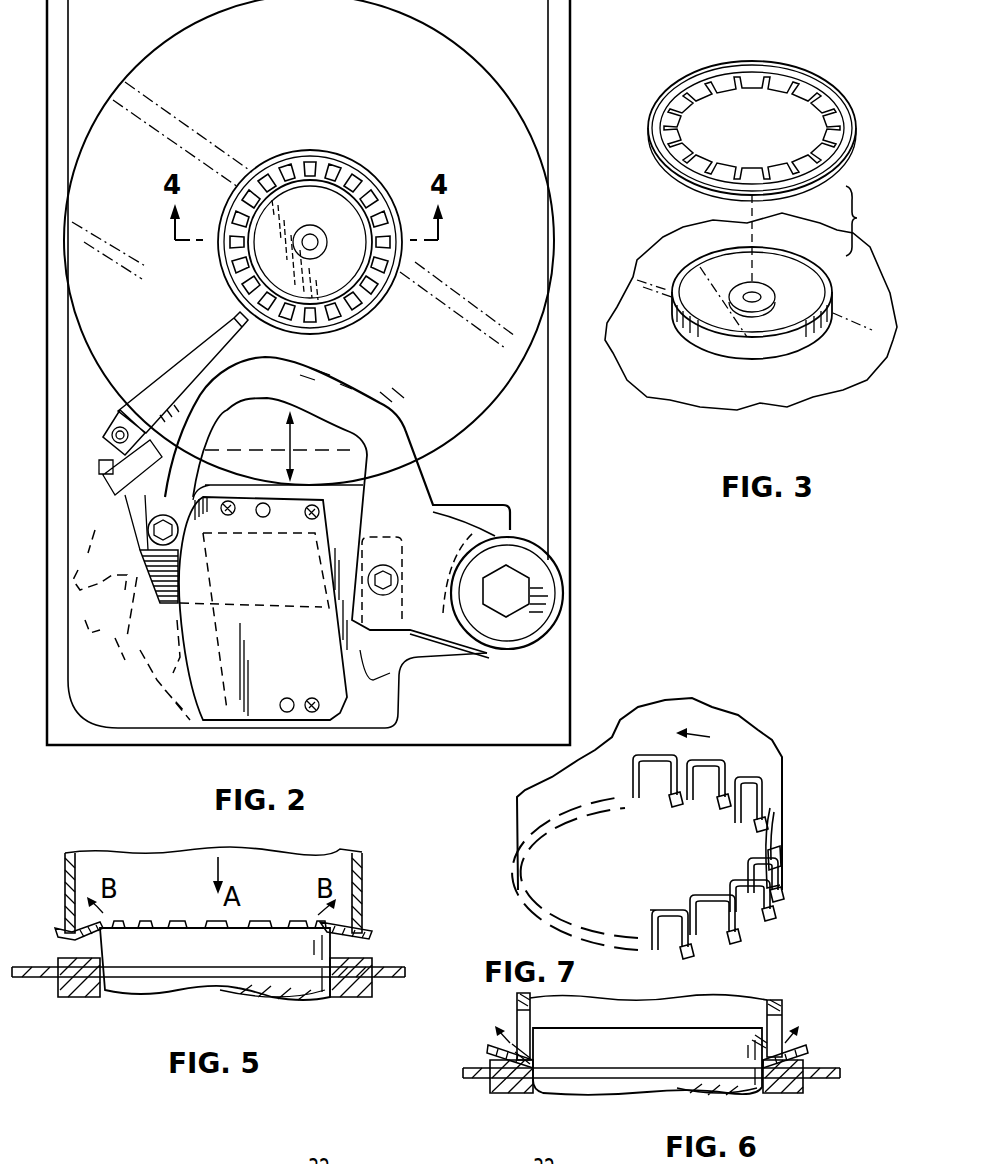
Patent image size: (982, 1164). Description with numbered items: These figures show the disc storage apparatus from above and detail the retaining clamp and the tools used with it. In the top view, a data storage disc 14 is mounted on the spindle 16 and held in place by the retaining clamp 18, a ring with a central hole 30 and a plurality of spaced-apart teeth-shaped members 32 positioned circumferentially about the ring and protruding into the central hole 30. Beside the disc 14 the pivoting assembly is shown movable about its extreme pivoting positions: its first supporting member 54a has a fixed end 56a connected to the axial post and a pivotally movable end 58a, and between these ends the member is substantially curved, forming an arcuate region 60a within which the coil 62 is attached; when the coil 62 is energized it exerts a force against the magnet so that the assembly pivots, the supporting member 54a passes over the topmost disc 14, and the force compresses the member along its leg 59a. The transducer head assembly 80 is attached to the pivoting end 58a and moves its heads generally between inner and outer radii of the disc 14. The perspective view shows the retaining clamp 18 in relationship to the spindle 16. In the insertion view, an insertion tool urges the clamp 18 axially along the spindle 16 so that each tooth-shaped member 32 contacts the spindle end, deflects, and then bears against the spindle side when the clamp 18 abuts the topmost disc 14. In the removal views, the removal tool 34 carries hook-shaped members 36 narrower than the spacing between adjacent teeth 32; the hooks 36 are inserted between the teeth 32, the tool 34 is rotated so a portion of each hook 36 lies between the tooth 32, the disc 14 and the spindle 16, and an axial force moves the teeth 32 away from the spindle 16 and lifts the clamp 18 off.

In FIG. 2, the data storage disc 14 is at (459, 47).
In FIG. 2, the spindle 16 is at (285, 155).
In FIG. 3, the spindle 16 is at (789, 347).
In FIG. 5, the spindle 16 is at (235, 962).
In FIG. 6, the spindle 16 is at (662, 1072).
In FIG. 2, the retaining clamp 18 is at (324, 150).
In FIG. 3, the retaining clamp 18 is at (812, 75).
In FIG. 5, the retaining clamp 18 is at (365, 931).
In FIG. 6, the retaining clamp 18 is at (803, 1055).
In FIG. 3, the central hole 30 is at (755, 122).
In FIG. 2, the teeth-shaped members 32 is at (362, 168).
In FIG. 3, the teeth-shaped members 32 is at (818, 111).
In FIG. 5, the teeth-shaped members 32 is at (178, 921).
In FIG. 6, the teeth-shaped members 32 is at (760, 1047).
In FIG. 7, the removal tool 34 is at (765, 746).
In FIG. 6, the removal tool 34 is at (779, 1002).
In FIG. 7, the hook-shaped members 36 is at (710, 818).
In FIG. 6, the hook-shaped members 36 is at (532, 1057).
In FIG. 2, the first supporting member 54a is at (448, 565).
In FIG. 2, the fixed end of the first supporting member 56a is at (527, 633).
In FIG. 2, the pivotally movable end of the first supporting member 58a is at (135, 538).
In FIG. 2, the leg of the first supporting member 59a is at (207, 441).
In FIG. 2, the arcuate region of the first supporting member 60a is at (345, 388).
In FIG. 2, the coil 62 is at (292, 614).
In FIG. 2, the transducer head assembly 80 is at (120, 413).